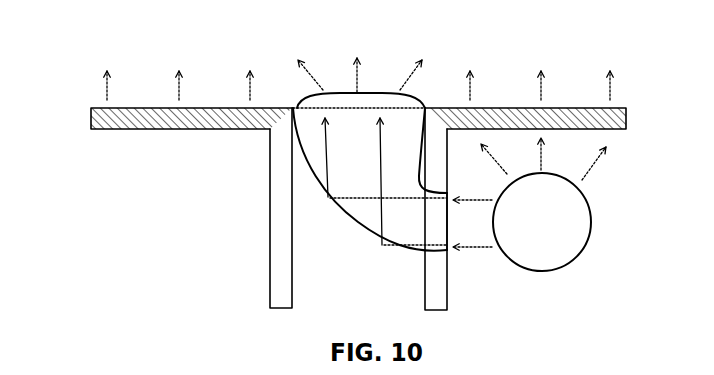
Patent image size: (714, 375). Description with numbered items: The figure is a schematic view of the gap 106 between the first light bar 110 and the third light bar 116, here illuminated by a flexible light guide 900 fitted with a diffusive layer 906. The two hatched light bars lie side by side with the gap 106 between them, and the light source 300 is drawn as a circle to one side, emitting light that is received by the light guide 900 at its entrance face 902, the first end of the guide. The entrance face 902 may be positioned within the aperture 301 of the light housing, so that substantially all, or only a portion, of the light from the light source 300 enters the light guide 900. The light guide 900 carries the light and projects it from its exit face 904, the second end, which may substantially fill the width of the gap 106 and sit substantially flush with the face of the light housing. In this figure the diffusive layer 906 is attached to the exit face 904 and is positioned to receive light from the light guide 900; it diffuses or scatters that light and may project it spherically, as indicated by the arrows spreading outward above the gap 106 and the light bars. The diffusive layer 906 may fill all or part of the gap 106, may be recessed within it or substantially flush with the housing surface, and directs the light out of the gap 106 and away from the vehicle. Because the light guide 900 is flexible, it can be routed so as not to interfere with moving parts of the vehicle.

The gap 106 is at (360, 305).
The first light bar 110 is at (107, 119).
The third light bar 116 is at (614, 115).
The light source 300 is at (563, 233).
The aperture 301 is at (435, 262).
The light guide 900 is at (350, 208).
The entrance face 902 is at (456, 232).
The exit face 904 is at (300, 98).
The diffusive layer 906 is at (376, 100).